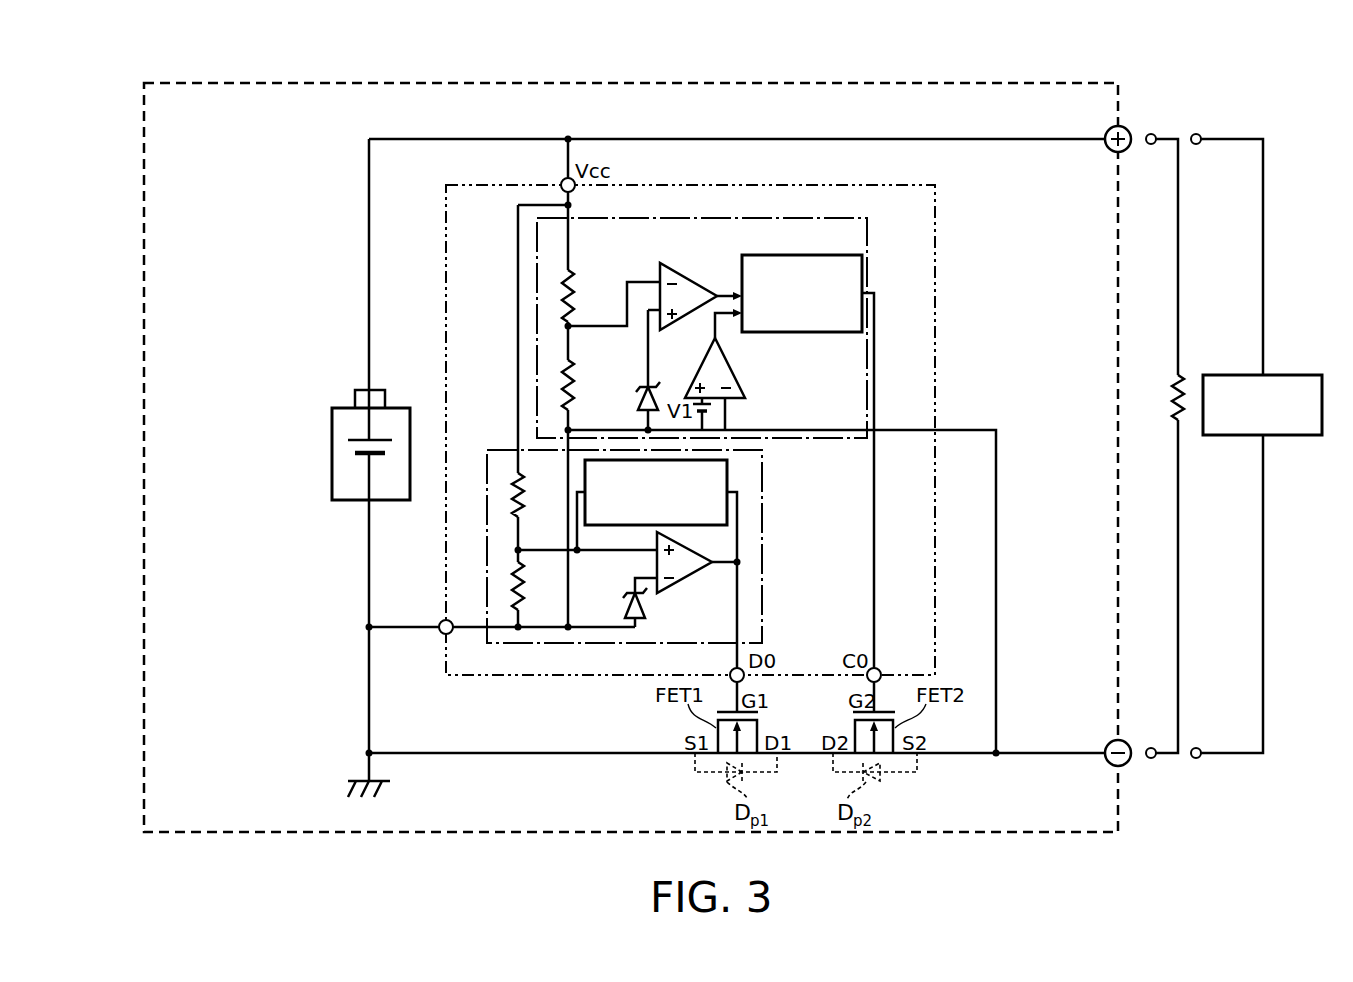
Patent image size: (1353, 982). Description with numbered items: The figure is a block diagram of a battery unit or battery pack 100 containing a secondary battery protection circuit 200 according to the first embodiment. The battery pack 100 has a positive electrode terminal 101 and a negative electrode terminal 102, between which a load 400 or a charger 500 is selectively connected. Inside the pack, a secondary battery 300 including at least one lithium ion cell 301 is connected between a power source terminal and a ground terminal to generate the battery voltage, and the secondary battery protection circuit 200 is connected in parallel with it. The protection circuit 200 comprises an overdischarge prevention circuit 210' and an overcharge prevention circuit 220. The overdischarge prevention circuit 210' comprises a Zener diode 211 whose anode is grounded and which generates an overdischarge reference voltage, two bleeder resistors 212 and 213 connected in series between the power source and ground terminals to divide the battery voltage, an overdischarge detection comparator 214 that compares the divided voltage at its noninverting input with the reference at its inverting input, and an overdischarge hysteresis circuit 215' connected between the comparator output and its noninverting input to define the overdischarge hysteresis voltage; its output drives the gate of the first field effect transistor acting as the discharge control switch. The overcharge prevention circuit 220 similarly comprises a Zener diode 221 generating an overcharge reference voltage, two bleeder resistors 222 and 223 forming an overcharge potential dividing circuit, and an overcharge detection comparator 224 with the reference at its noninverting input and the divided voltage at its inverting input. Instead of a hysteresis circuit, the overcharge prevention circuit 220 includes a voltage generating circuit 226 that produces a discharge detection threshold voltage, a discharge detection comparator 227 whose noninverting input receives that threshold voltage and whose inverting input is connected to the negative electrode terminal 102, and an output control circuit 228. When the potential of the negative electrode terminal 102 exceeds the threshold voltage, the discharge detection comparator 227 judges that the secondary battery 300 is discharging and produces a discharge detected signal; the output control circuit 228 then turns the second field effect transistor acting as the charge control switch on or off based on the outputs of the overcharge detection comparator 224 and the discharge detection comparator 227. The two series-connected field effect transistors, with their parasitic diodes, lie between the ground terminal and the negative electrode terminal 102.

The battery unit (battery pack) 100 is at (795, 83).
The positive electrode terminal 101 is at (1126, 126).
The negative electrode terminal 102 is at (1130, 765).
The secondary battery protection circuit 200 is at (938, 200).
The overdischarge prevention circuit 210' is at (580, 602).
The Zener diode 211 is at (655, 605).
The bleeder resistor 212 is at (517, 497).
The bleeder resistor 213 is at (517, 590).
The overdischarge detection comparator 214 is at (655, 566).
The overdischarge hysteresis circuit 215' is at (711, 492).
The overcharge prevention circuit 220 is at (772, 217).
The Zener diode 221 is at (640, 387).
The bleeder resistor 222 is at (562, 285).
The bleeder resistor 223 is at (562, 378).
The overcharge detection comparator 224 is at (696, 277).
The voltage generating circuit 226 is at (712, 408).
The discharge detection comparator 227 is at (748, 370).
The output control circuit 228 is at (845, 255).
The secondary battery 300 is at (332, 428).
The lithium ion cell 301 is at (366, 458).
The load 400 is at (1174, 388).
The charger 500 is at (1293, 375).